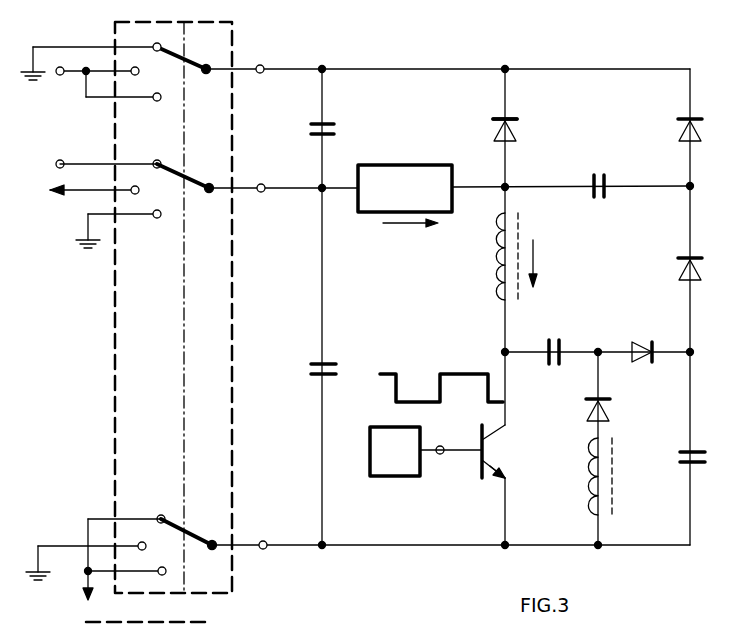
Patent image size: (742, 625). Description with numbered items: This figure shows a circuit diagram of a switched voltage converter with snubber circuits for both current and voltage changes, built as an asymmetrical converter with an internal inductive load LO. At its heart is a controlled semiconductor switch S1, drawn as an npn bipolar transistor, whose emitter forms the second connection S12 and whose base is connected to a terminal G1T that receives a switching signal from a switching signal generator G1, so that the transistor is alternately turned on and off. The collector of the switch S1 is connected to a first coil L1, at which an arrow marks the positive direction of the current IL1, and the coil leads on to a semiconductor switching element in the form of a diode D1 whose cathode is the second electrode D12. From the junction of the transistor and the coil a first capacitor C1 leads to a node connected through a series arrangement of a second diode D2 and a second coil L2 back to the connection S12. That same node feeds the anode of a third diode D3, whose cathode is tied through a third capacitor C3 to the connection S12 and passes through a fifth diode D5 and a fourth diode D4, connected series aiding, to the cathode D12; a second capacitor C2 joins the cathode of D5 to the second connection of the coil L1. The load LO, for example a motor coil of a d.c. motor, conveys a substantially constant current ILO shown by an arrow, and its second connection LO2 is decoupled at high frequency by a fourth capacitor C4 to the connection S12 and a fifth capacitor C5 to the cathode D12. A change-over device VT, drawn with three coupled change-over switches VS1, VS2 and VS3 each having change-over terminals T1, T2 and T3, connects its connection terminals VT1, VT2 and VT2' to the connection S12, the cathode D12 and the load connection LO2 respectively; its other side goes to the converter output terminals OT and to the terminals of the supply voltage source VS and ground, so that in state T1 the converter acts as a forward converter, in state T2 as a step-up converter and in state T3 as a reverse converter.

The change-over device VT is at (114, 326).
The change-over switch VS1 is at (200, 535).
The change-over switch VS2 is at (204, 175).
The change-over switch VS3 is at (124, 75).
The change-over terminal T1 is at (165, 39).
The change-over terminal T2 is at (107, 308).
The change-over terminal T3 is at (160, 101).
The converter output terminal OT is at (60, 160).
The supply voltage source VS is at (78, 588).
The connection terminal VT1 is at (263, 540).
The connection terminal VT2 is at (263, 48).
The connection terminal VT2' is at (275, 202).
The first capacitor C1 is at (554, 338).
The second capacitor C2 is at (598, 172).
The third capacitor C3 is at (680, 458).
The fourth capacitor C4 is at (311, 371).
The fifth capacitor C5 is at (311, 129).
The semiconductor switching element D1 is at (514, 133).
The second electrode D12 is at (507, 116).
The second semiconductor switching element D2 is at (586, 408).
The third semiconductor switching element D3 is at (640, 340).
The fourth semiconductor switching element D4 is at (678, 132).
The fifth diode D5 is at (678, 270).
The first coil L1 is at (502, 270).
The second coil L2 is at (596, 480).
The current IL1 is at (533, 252).
The inductive load LO is at (418, 158).
The second connection LO2 is at (356, 200).
The current ILO is at (410, 228).
The switching signal generator G1 is at (408, 480).
The terminal G1T is at (443, 396).
The controlled semiconductor switch S1 is at (480, 465).
The second connection S12 is at (492, 456).